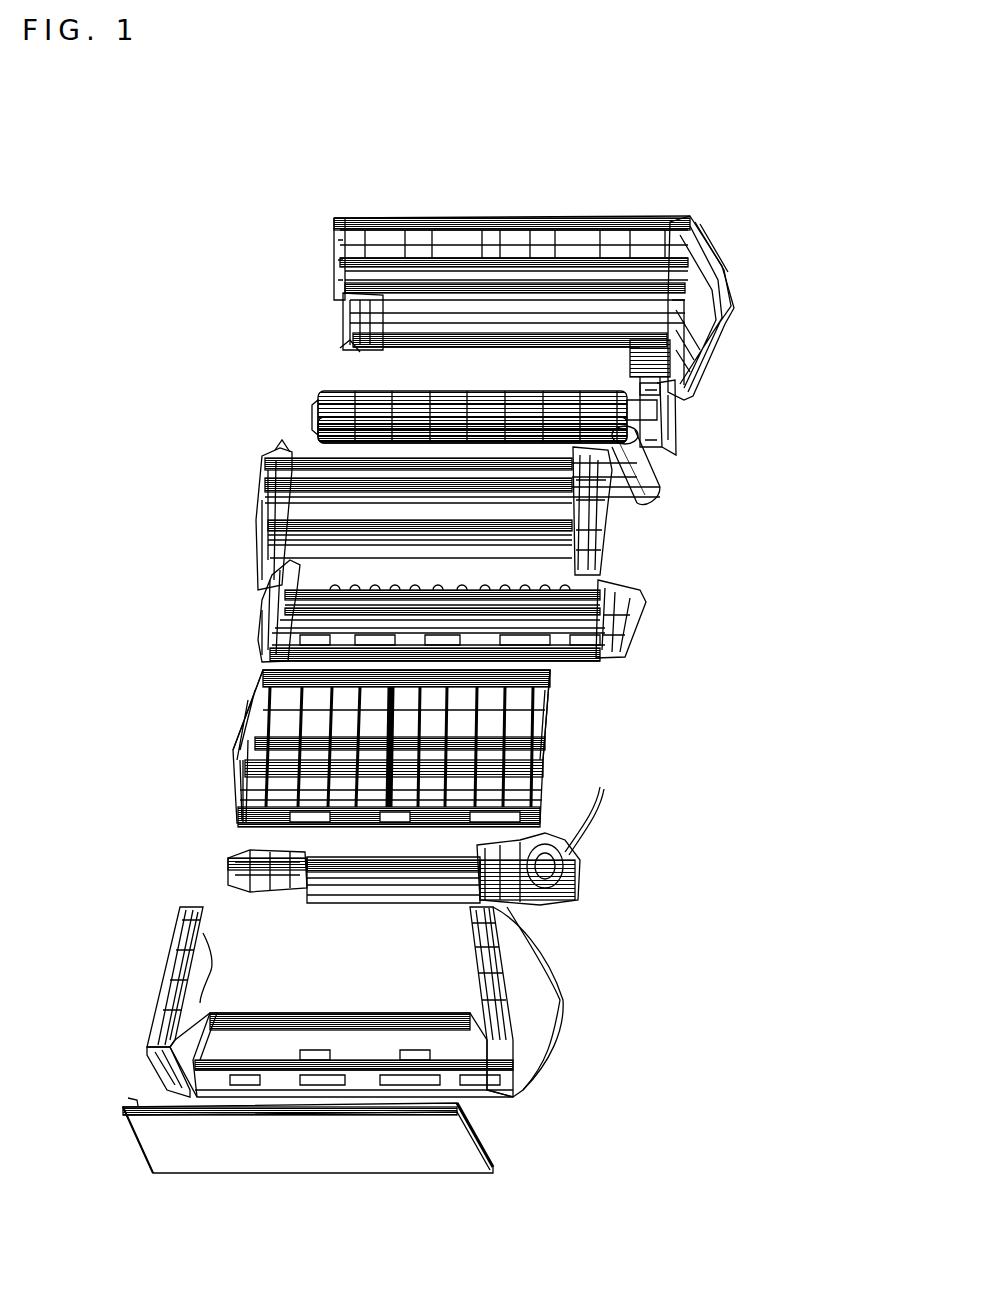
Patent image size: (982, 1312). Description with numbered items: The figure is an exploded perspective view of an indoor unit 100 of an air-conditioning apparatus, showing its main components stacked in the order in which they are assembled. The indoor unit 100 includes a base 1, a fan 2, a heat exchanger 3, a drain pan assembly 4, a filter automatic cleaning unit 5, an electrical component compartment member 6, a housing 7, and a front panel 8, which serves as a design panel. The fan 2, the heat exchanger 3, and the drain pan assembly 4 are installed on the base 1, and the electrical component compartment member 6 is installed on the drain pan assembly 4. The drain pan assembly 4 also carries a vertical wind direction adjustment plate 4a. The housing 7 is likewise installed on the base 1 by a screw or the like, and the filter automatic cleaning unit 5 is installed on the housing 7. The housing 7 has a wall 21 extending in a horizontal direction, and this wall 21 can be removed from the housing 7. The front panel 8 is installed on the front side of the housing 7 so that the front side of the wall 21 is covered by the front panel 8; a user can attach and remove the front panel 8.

The indoor unit 100 is at (255, 302).
The base 1 is at (732, 260).
The fan 2 is at (691, 423).
The heat exchanger 3 is at (627, 522).
The drain pan assembly 4 is at (646, 622).
The vertical wind direction adjustment plate 4a is at (550, 663).
The filter automatic cleaning unit 5 is at (550, 761).
The electrical component compartment member 6 is at (597, 861).
The housing 7 is at (562, 1001).
The front panel 8 is at (503, 1134).
The wall 21 is at (160, 1073).